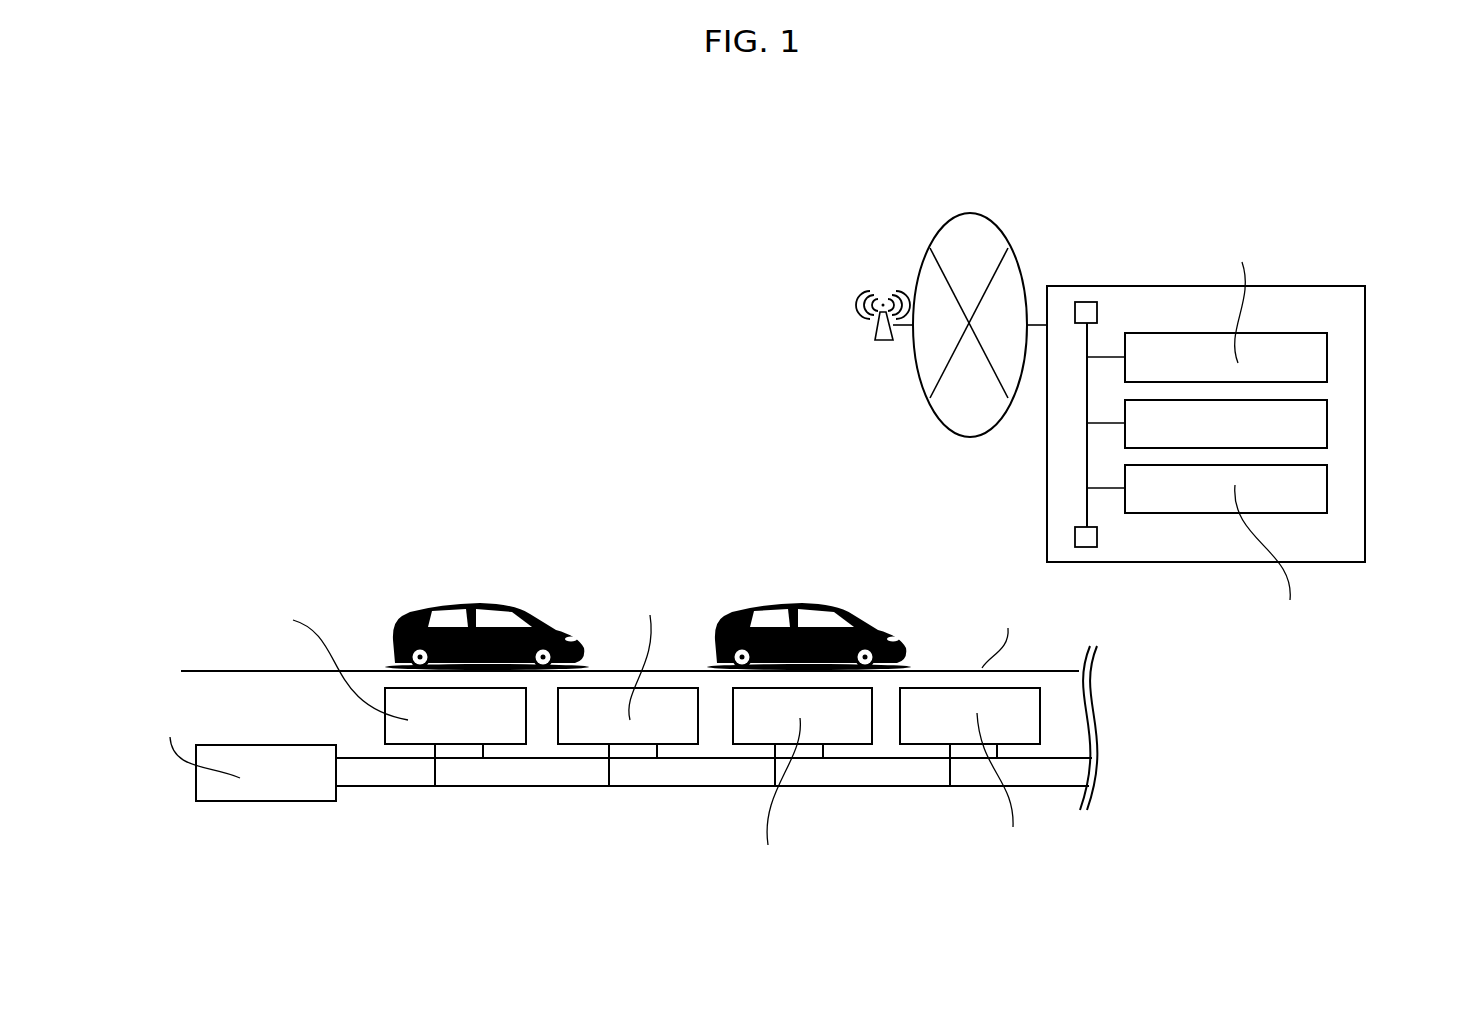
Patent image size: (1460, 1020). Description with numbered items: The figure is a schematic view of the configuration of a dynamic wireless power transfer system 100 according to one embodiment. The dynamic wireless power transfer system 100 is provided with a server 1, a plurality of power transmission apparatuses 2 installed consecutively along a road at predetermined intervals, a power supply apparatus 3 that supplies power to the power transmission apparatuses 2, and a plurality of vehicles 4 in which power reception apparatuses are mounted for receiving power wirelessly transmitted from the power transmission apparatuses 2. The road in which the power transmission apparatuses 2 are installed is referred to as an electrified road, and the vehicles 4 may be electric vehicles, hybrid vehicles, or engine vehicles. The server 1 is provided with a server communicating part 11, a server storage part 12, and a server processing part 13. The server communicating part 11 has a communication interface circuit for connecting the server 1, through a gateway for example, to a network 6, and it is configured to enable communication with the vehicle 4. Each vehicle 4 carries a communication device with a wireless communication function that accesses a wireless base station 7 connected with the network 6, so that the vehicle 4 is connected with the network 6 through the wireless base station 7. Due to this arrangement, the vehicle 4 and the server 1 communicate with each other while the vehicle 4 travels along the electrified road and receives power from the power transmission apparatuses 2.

The dynamic wireless power transfer system 100 is at (580, 213).
The server 1 is at (1088, 286).
The power transmission apparatus 2 is at (580, 746).
The power supply apparatus 3 is at (263, 803).
The vehicle 4 is at (498, 606).
The network 6 is at (970, 213).
The wireless base station 7 is at (875, 328).
The server communicating part 11 is at (1327, 355).
The server storage part 12 is at (1327, 420).
The server processing part 13 is at (1327, 485).